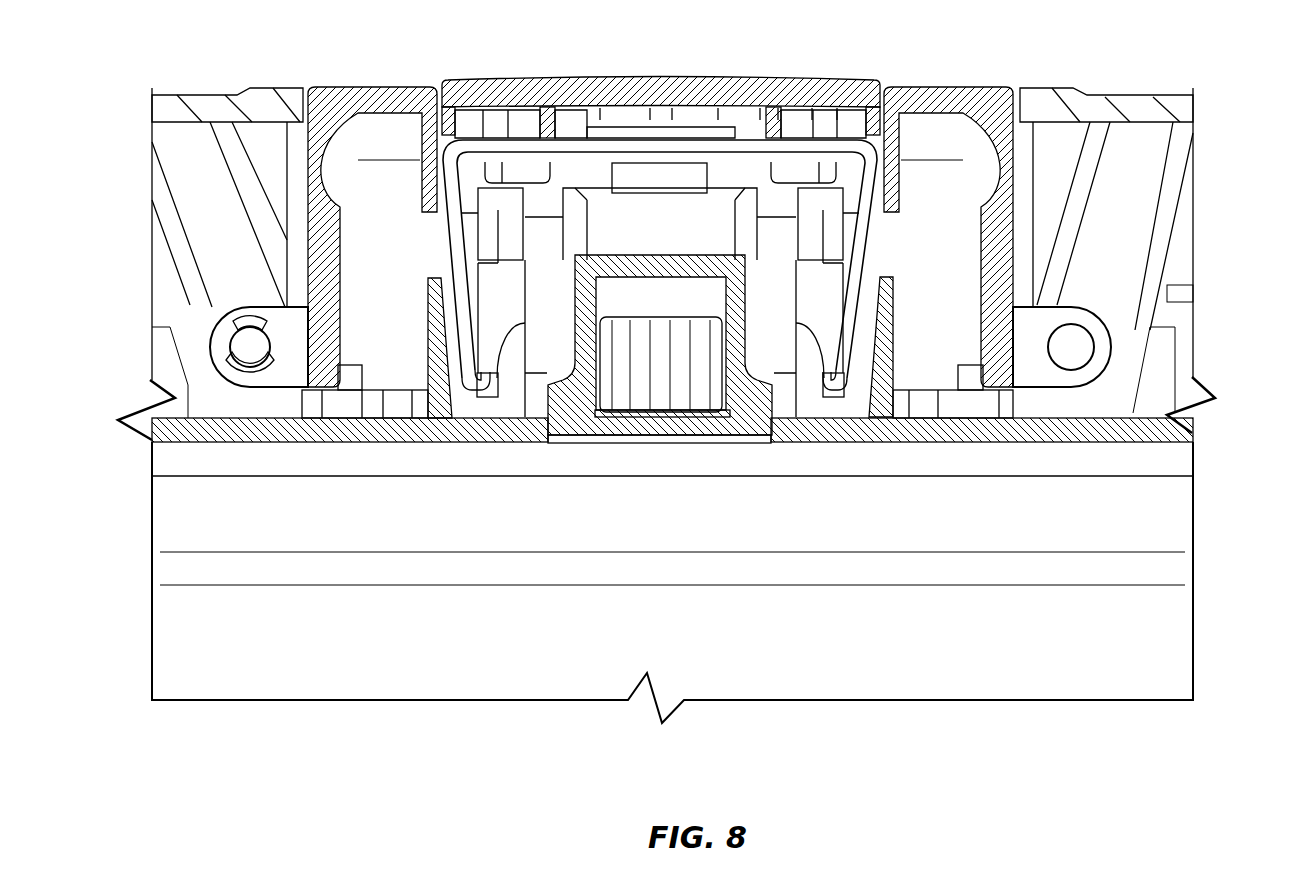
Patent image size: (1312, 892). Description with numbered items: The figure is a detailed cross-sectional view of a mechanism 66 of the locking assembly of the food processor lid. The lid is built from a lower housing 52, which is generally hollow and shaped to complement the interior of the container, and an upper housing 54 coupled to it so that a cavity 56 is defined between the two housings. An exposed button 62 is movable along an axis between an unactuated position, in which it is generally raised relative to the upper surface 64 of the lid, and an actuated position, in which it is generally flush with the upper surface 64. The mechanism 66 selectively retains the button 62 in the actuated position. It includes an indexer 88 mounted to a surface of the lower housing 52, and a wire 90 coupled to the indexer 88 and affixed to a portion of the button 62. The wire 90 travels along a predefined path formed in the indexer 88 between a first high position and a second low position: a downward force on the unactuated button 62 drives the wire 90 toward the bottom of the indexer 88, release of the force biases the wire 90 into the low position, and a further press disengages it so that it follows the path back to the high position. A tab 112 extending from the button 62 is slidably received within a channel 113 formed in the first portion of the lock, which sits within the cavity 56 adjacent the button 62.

The lower housing 52 is at (922, 463).
The upper housing 54 is at (1105, 108).
The cavity 56 is at (287, 183).
The button 62 is at (613, 92).
The upper surface 64 is at (205, 89).
The mechanism 66 is at (516, 175).
The indexer 88 is at (492, 400).
The wire 90 is at (755, 150).
The tab 112 is at (1030, 373).
The channel 113 is at (1102, 233).